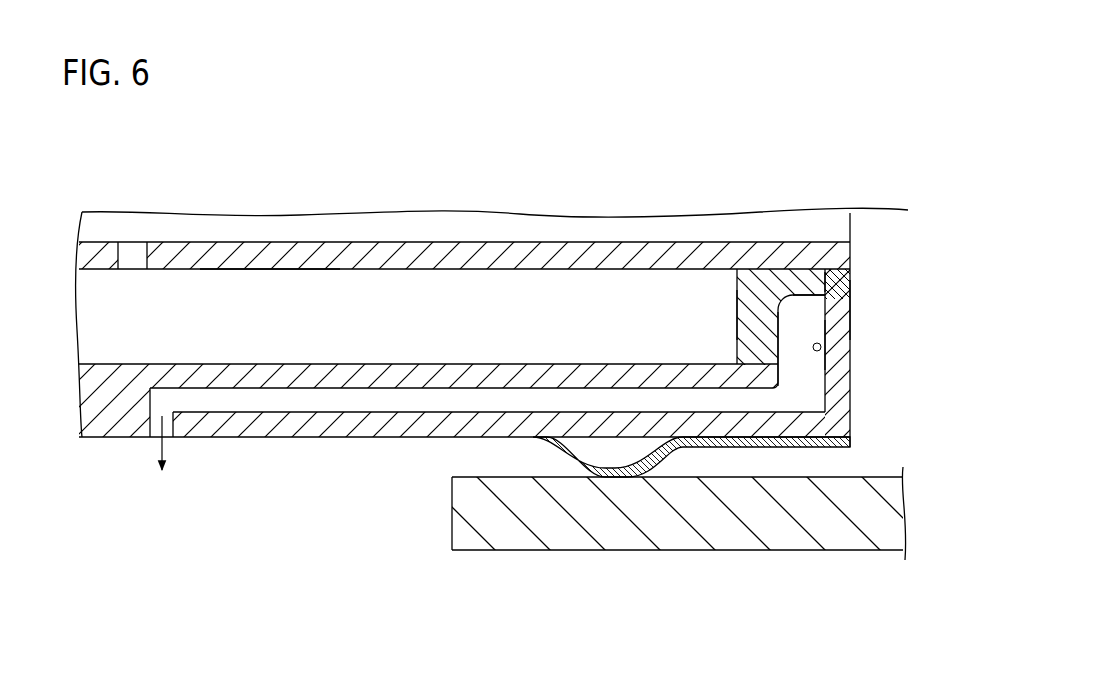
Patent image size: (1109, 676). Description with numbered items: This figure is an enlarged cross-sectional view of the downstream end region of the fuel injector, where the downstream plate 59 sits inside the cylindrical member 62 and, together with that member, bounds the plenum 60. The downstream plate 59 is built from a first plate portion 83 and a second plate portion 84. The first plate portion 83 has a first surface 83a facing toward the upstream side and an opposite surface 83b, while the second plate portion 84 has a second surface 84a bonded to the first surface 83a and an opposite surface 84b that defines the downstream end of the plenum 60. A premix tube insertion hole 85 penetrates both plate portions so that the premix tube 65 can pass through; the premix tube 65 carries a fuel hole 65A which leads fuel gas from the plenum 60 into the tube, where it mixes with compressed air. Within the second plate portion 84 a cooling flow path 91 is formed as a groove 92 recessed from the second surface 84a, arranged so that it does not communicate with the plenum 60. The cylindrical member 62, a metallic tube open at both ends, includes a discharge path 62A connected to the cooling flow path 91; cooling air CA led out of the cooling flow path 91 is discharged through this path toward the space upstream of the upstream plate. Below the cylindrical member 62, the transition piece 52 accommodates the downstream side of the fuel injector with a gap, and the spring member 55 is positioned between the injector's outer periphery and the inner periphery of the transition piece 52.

The transition piece 52 is at (683, 535).
The spring member 55 is at (608, 480).
The downstream plate 59 is at (852, 310).
The plenum 60 is at (483, 305).
The cylindrical member 62 is at (464, 394).
The discharge path 62A is at (342, 402).
The premix tube 65 is at (273, 272).
The fuel hole 65A is at (134, 262).
The first plate portion 83 is at (874, 337).
The first surface 83a is at (821, 349).
The surface 83b is at (818, 347).
The second plate portion 84 is at (763, 253).
The second surface 84a is at (837, 268).
The surface 84b is at (735, 318).
The premix tube insertion hole 85 is at (845, 272).
The cooling flow path 91 is at (805, 253).
The groove 92 is at (806, 312).
The cooling air CA is at (163, 461).